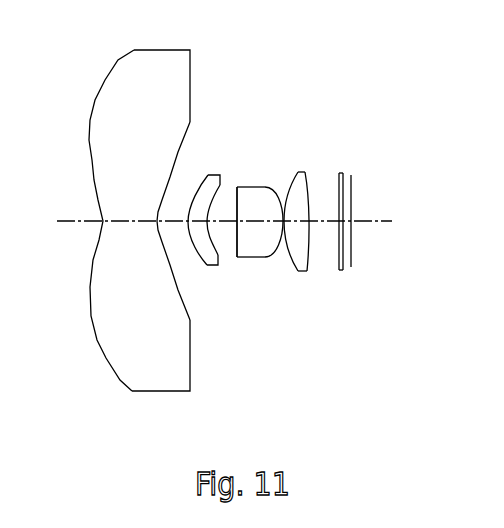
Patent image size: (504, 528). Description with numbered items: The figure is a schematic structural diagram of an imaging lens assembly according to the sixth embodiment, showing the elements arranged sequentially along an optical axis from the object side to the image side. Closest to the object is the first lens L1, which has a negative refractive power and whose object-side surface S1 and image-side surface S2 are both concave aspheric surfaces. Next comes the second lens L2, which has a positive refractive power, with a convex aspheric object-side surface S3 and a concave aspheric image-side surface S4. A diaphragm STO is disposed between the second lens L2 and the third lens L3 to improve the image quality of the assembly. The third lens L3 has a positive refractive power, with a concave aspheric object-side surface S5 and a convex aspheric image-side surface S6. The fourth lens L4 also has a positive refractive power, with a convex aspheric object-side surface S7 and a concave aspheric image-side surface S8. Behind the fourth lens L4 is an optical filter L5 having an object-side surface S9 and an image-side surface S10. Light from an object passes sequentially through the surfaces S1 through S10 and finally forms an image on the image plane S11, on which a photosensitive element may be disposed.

The first lens L1 is at (103, 224).
The second lens L2 is at (170, 224).
The third lens L3 is at (233, 224).
The fourth lens L4 is at (311, 224).
The optical filter L5 is at (385, 224).
The diaphragm STO is at (236, 197).
The object-side surface of the first lens S1 is at (103, 223).
The image-side surface of the first lens S2 is at (157, 223).
The object-side surface of the second lens S3 is at (187, 224).
The image-side surface of the second lens S4 is at (207, 223).
The object-side surface of the third lens S5 is at (237, 247).
The image-side surface of the third lens S6 is at (283, 232).
The object-side surface of the fourth lens S7 is at (284, 228).
The image-side surface of the fourth lens S8 is at (308, 226).
The object-side surface of the optical filter S9 is at (339, 223).
The image-side surface of the optical filter S10 is at (343, 223).
The image plane S11 is at (351, 223).